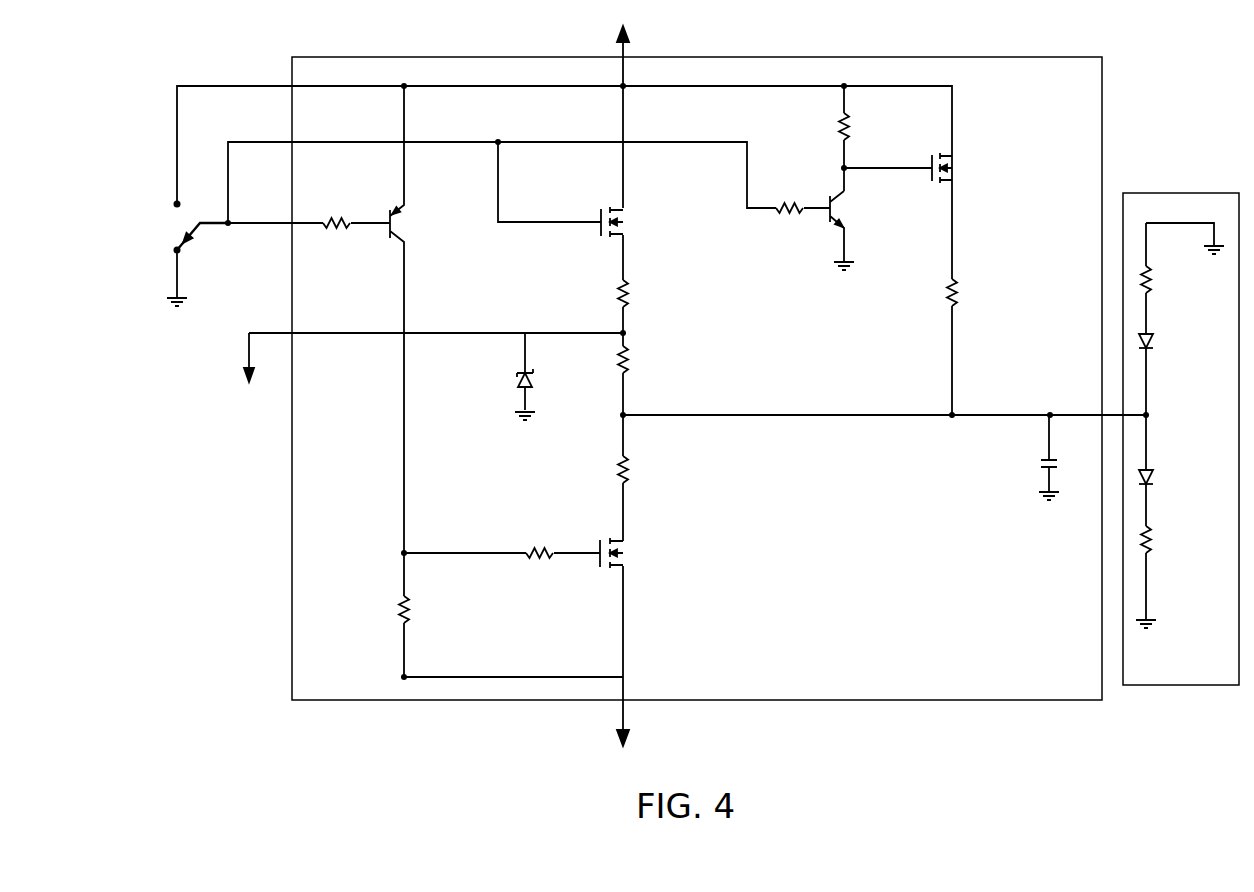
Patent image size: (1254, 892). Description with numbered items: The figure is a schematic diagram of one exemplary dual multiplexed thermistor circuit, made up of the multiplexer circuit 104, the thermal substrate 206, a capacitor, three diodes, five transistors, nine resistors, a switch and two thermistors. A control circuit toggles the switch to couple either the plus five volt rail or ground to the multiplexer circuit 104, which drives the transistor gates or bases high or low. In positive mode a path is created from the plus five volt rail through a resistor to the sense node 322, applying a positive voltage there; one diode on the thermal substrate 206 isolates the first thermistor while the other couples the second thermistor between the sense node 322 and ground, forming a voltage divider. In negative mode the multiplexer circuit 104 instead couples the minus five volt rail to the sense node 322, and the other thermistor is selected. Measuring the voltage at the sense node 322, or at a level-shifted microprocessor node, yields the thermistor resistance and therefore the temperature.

The multiplexer circuit 104 is at (492, 56).
The thermal substrate 206 is at (1208, 192).
The sense node 322 is at (1150, 414).